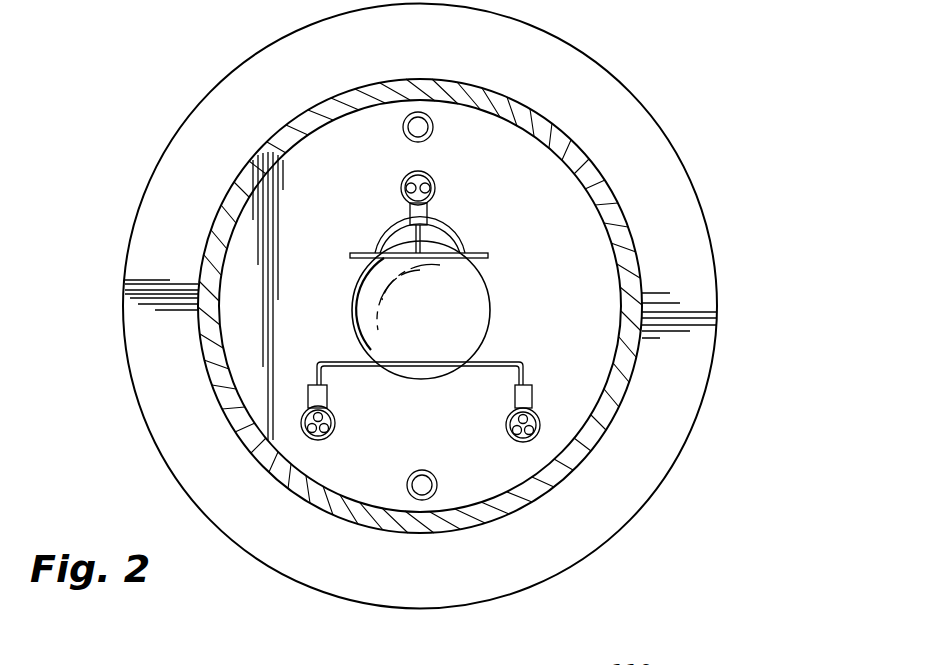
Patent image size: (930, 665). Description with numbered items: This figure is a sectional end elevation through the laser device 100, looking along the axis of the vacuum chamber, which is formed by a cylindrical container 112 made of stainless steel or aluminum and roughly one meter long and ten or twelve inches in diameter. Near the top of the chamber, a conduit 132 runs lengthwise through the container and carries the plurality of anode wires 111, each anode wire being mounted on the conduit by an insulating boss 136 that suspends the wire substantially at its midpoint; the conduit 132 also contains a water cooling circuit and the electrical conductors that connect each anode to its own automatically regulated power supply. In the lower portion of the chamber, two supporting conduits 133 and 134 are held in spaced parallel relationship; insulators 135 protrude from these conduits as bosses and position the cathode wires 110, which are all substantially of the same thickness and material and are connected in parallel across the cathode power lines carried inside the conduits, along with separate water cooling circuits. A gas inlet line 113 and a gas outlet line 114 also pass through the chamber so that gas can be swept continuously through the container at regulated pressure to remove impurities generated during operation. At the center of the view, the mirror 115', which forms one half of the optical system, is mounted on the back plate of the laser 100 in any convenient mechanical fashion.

The laser device 100 is at (606, 60).
The cylindrical container 112 is at (632, 230).
The gas inlet line 113 is at (433, 133).
The gas outlet line 114 is at (437, 481).
The conduit 132 is at (440, 183).
The insulating bosses 136 is at (428, 210).
The anode wires 111 is at (482, 252).
The mirror 115' is at (454, 310).
The cathode wires 110 is at (500, 361).
The insulators 135 is at (531, 396).
The supporting conduit 134 is at (335, 422).
The supporting conduit 133 is at (504, 423).